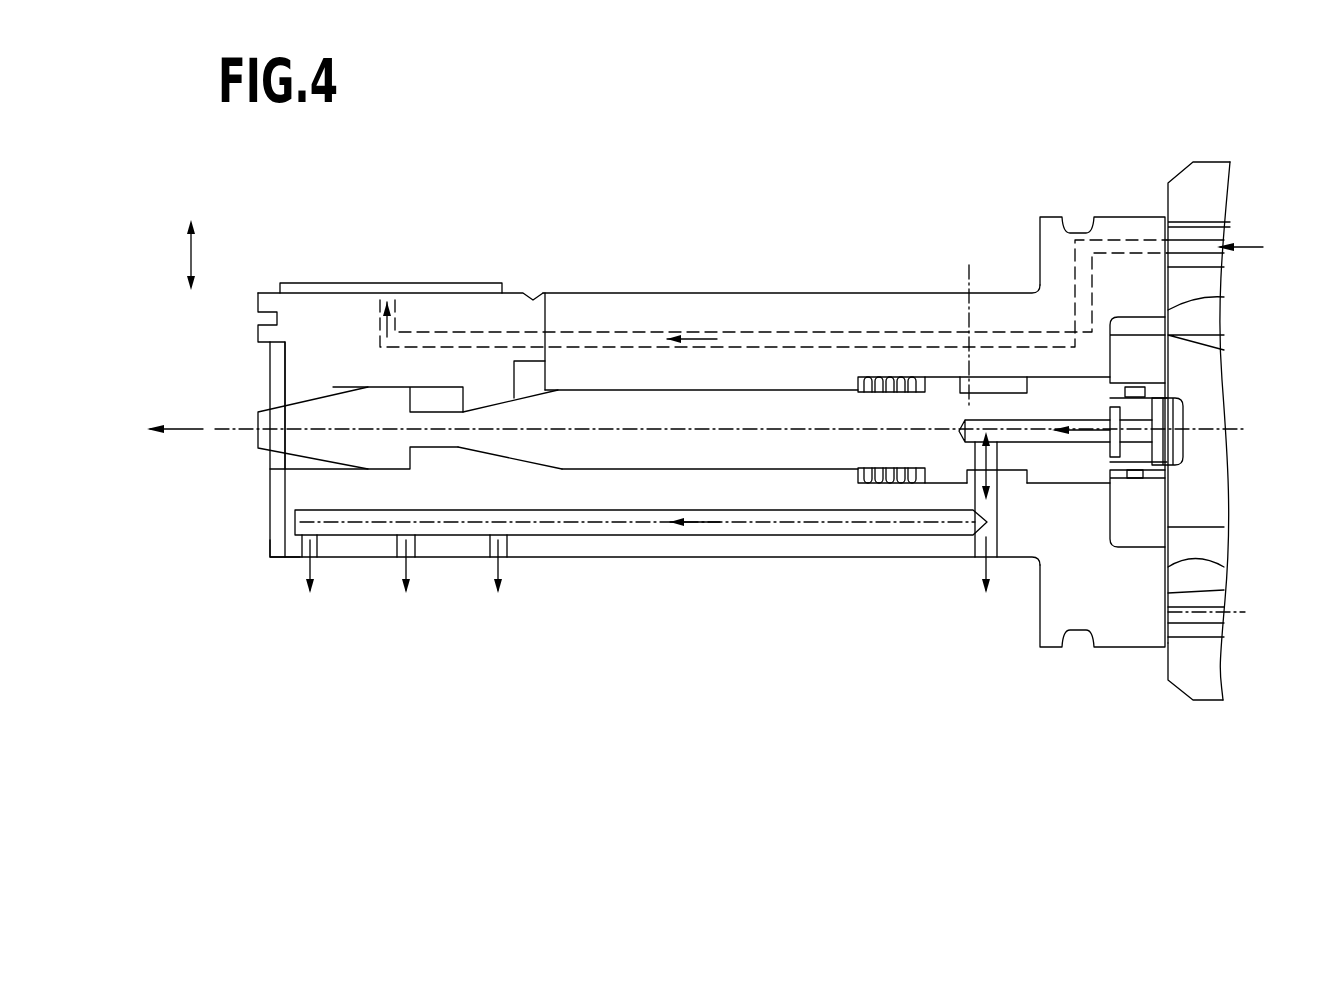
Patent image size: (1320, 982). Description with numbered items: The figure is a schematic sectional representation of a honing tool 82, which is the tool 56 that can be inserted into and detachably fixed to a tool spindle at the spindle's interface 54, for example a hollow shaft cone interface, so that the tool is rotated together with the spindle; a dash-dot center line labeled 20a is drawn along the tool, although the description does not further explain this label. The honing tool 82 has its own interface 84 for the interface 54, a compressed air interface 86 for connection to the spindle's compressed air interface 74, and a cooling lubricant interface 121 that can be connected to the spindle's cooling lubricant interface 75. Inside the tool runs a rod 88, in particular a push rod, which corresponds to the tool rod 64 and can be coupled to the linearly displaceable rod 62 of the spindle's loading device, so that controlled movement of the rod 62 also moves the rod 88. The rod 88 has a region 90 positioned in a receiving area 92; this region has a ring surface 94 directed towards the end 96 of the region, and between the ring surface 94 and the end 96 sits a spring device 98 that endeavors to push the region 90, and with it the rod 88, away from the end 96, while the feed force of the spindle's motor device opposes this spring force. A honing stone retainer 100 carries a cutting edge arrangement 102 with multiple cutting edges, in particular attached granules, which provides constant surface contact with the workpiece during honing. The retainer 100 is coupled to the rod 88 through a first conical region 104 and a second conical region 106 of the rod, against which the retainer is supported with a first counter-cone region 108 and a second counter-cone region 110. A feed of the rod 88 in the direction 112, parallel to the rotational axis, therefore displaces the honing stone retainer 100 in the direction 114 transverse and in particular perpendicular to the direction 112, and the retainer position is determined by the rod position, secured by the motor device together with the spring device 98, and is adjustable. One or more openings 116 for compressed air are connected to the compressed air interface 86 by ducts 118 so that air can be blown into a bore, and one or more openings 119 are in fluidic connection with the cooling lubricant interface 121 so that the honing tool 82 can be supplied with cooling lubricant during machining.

The longitudinal axis 20a is at (230, 429).
The interface 54 is at (1222, 183).
The tool 56 is at (607, 193).
The rod 62 is at (1190, 515).
The rod 64 is at (718, 468).
The compressed air interface 74 is at (1167, 247).
The interface for cooling lubricant 75 is at (1193, 453).
The honing tool 82 is at (655, 238).
The interface 84 is at (1120, 625).
The compressed air interface 86 is at (1165, 240).
The rod 88 is at (613, 452).
The region 90 is at (942, 463).
The receiving area 92 is at (905, 377).
The ring surface 94 is at (907, 487).
The end 96 is at (878, 377).
The spring device 98 is at (865, 483).
The honing stone retainer 100 is at (332, 322).
The cutting edge arrangement 102 is at (477, 290).
The first conical region 104 is at (510, 458).
The second conical region 106 is at (278, 560).
The first counter-cone region 108 is at (492, 400).
The second counter-cone region 110 is at (328, 395).
The direction 112 is at (185, 430).
The direction 114 is at (191, 258).
The openings 116 is at (393, 290).
The ducts 118 is at (773, 340).
The openings 119 is at (315, 558).
The cooling lubricant interface 121 is at (1110, 420).